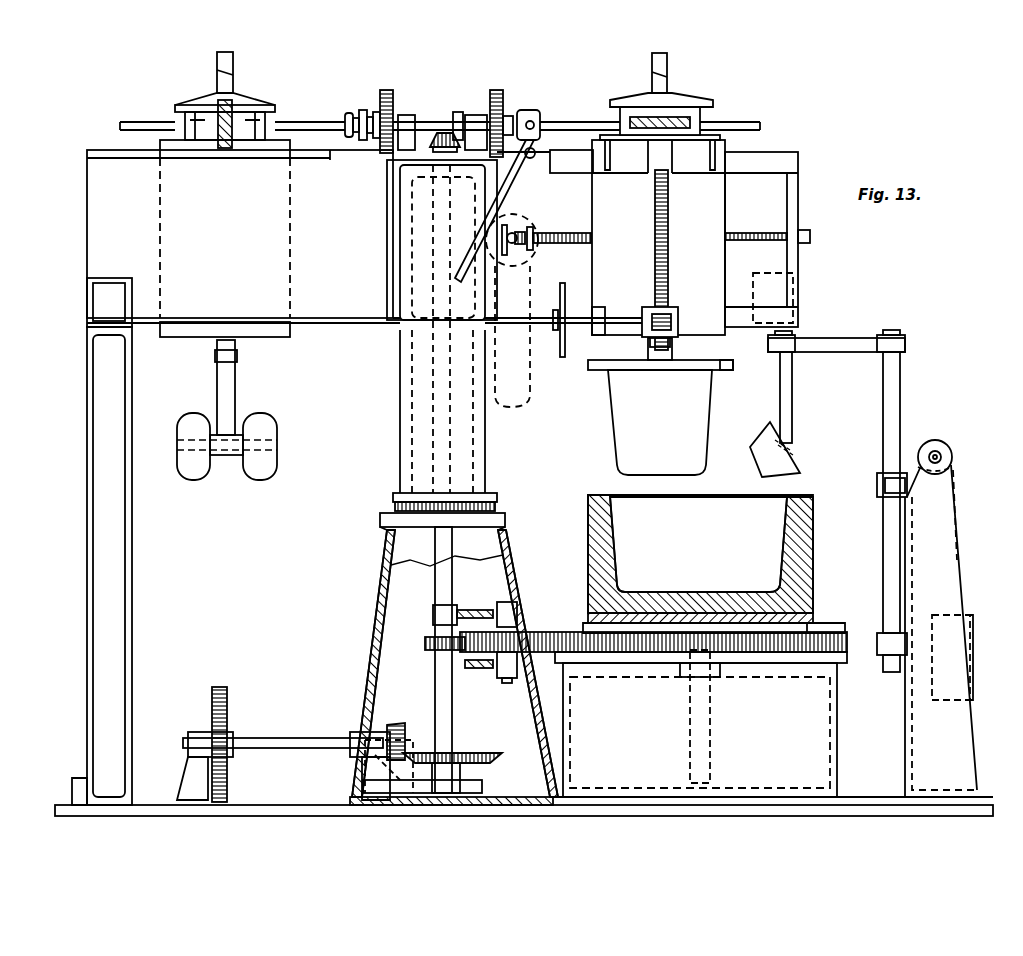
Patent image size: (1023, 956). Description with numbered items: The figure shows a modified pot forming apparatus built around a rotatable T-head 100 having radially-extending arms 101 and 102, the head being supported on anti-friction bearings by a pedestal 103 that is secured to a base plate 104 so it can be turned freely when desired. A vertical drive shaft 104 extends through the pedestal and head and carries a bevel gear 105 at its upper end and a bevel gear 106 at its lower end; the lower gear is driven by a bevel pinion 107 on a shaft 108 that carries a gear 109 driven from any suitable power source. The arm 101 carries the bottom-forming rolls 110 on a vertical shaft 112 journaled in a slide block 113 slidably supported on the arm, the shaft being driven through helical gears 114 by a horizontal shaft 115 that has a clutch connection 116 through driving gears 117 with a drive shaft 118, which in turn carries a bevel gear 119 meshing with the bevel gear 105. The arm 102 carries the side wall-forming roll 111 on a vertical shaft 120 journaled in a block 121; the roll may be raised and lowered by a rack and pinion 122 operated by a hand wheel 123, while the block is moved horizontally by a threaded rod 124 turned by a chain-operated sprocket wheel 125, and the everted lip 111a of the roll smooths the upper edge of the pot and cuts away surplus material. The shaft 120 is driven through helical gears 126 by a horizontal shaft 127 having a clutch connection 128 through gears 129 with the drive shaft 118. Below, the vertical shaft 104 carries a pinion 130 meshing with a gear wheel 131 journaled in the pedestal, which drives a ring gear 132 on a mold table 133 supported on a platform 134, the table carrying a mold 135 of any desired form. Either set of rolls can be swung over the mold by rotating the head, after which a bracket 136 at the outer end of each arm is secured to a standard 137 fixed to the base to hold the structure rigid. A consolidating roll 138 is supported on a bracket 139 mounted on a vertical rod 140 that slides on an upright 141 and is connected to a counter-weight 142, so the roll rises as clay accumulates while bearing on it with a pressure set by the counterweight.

The rotatable T-head 100 is at (398, 394).
The radially-extending arm 101 is at (95, 197).
The radially-extending arm 102 is at (780, 263).
The pedestal 103 is at (383, 588).
The base plate / drive shaft 104 is at (440, 676).
The bevel gear 105 is at (443, 133).
The bevel gear 106 is at (480, 752).
The bevel pinion 107 is at (400, 722).
The shaft 108 is at (285, 740).
The gear 109 is at (225, 690).
The bottom-forming rolls 110 is at (248, 468).
The side wall-forming roll 111 is at (618, 410).
The everted lip 111a is at (735, 367).
The vertical shaft 112 is at (232, 390).
The slide block 113 is at (275, 272).
The helical gears 114 is at (225, 104).
The horizontal shaft 115 is at (292, 122).
The clutch connection 116 is at (357, 117).
The driving gears 117 is at (387, 90).
The drive shaft 118 is at (422, 120).
The bevel gear 119 is at (462, 105).
The vertical shaft 120 is at (668, 240).
The block 121 is at (720, 203).
The rack and pinion 122 is at (668, 312).
The hand wheel 123 is at (562, 355).
The threaded rod 124 is at (565, 233).
The chain-operated sprocket wheel 125 is at (535, 263).
The helical gears 126 is at (668, 126).
The horizontal shaft 127 is at (573, 121).
The clutch connection 128 is at (532, 112).
The gears 129 is at (505, 92).
The pinion 130 is at (433, 632).
The gear wheel 131 is at (530, 630).
The ring gear 132 is at (618, 650).
The mold table 133 is at (765, 660).
The platform 134 is at (820, 713).
The mold 135 is at (815, 576).
The bracket 136 is at (778, 306).
The standard 137 is at (100, 377).
The consolidating roll 138 is at (795, 463).
The bracket 139 is at (828, 345).
The vertical rod 140 is at (903, 388).
The upright 141 is at (940, 512).
The counter-weight 142 is at (964, 616).